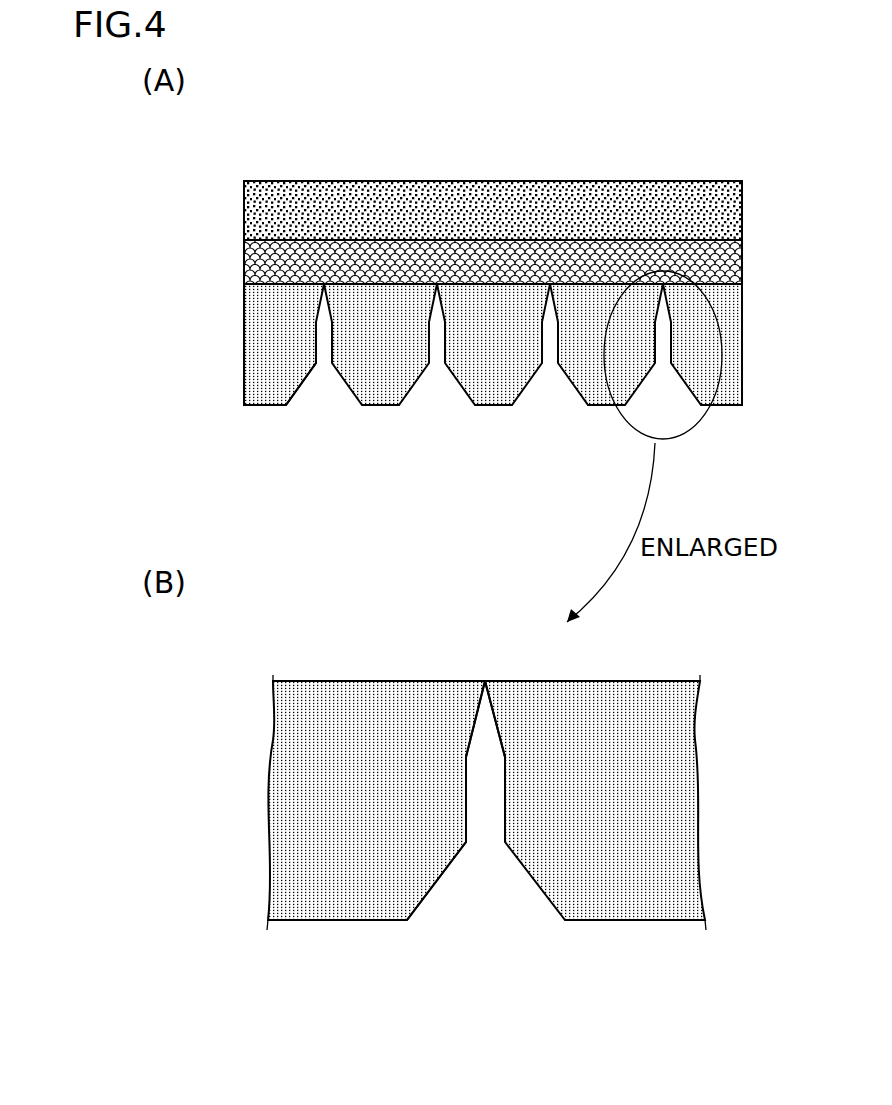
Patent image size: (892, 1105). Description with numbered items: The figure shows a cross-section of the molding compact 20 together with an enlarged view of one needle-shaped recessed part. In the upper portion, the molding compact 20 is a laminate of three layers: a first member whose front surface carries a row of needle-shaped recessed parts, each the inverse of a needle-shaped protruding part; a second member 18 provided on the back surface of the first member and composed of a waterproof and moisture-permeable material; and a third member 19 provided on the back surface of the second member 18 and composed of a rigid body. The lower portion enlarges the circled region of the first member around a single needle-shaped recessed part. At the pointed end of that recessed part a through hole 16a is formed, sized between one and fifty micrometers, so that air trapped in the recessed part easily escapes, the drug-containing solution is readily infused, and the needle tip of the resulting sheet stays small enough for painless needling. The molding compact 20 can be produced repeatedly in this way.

The molding compact 20 is at (523, 268).
The third member 19 is at (742, 210).
The second member 18 is at (742, 258).
The through hole 16a is at (485, 681).